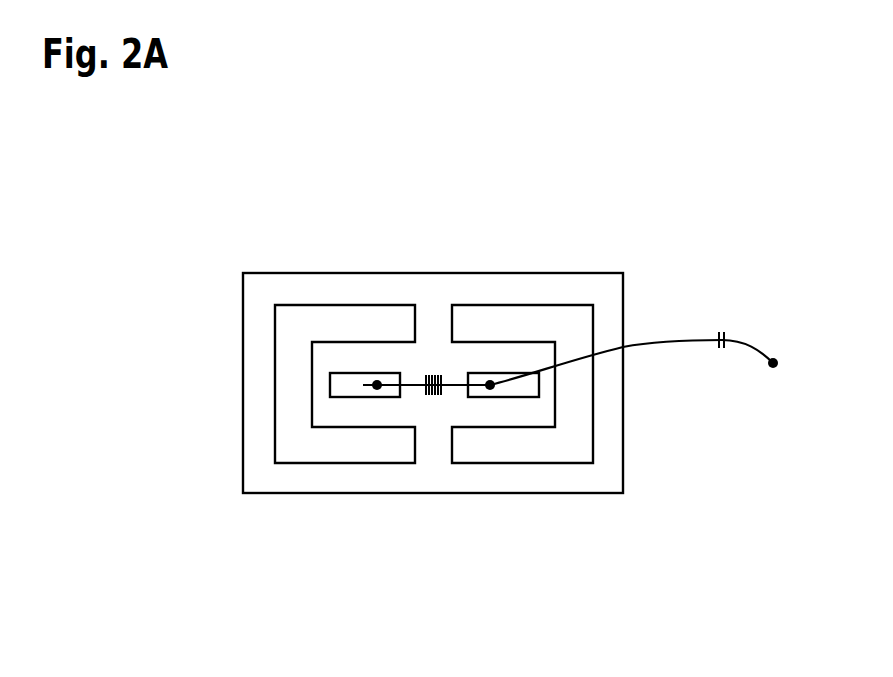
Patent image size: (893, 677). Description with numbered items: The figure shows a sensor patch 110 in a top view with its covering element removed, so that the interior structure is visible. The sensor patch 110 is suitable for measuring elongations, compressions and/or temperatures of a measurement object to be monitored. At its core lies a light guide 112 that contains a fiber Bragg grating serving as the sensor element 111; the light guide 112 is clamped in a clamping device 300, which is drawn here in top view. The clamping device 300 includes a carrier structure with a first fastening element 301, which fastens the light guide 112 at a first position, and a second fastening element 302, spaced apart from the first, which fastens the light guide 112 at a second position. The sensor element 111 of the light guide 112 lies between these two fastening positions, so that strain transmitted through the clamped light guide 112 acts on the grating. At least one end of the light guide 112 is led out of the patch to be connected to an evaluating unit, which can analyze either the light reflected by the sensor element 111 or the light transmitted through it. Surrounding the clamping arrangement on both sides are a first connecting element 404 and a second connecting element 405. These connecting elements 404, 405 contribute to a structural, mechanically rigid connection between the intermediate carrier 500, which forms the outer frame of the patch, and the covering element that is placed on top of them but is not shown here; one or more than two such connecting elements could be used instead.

The sensor patch 110 is at (165, 350).
The sensor element 111 is at (433, 395).
The light guide 112 is at (705, 340).
The clamping device 300 is at (320, 353).
The first fastening element 301 is at (348, 387).
The second fastening element 302 is at (517, 388).
The first connecting element 404 is at (367, 320).
The second connecting element 405 is at (532, 320).
The intermediate carrier 500 is at (288, 288).